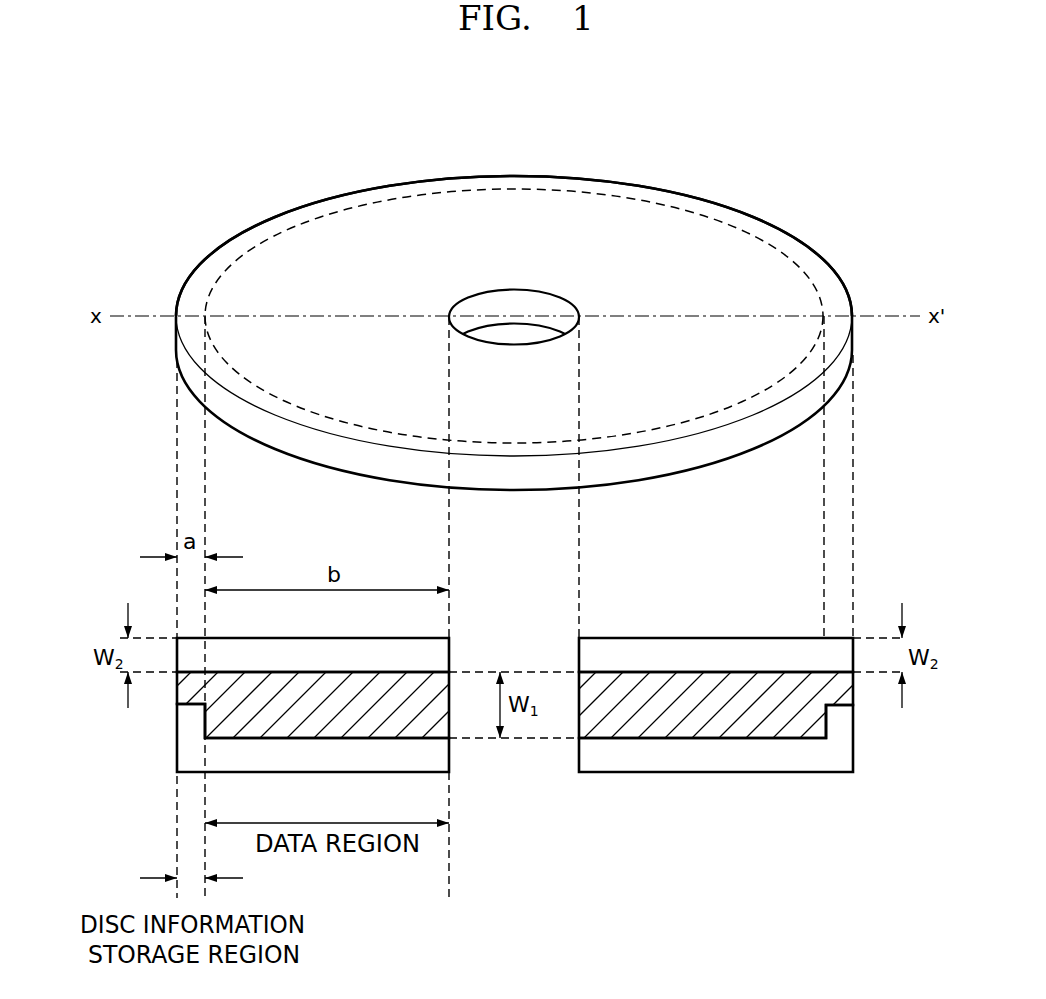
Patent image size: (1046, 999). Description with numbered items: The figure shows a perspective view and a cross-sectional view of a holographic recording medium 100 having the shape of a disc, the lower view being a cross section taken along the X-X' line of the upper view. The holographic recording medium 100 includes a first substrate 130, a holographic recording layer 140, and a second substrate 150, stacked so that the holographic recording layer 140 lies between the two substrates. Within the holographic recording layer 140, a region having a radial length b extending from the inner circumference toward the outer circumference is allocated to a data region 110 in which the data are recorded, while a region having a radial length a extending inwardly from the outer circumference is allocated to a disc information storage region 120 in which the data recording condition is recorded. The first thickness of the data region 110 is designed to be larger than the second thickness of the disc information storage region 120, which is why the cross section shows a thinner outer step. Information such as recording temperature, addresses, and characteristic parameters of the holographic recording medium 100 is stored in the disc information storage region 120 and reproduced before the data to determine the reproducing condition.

The holographic recording medium 100 is at (737, 163).
The data region 110 is at (765, 270).
The disc information storage region 120 is at (850, 298).
The first substrate 130 is at (190, 648).
The holographic recording layer 140 is at (218, 710).
The second substrate 150 is at (190, 752).